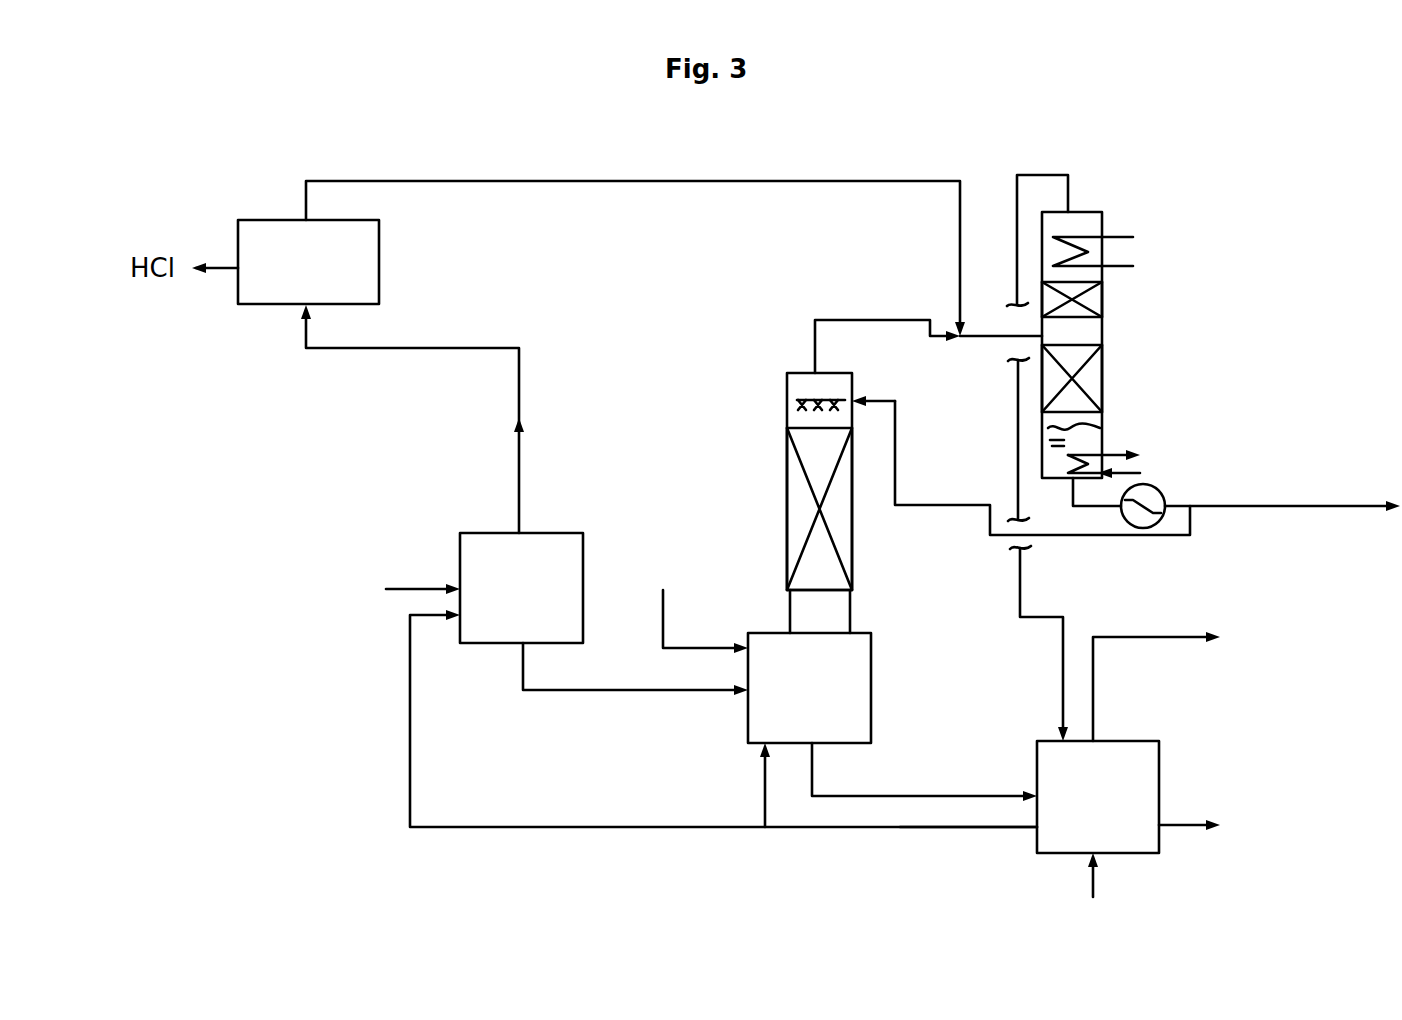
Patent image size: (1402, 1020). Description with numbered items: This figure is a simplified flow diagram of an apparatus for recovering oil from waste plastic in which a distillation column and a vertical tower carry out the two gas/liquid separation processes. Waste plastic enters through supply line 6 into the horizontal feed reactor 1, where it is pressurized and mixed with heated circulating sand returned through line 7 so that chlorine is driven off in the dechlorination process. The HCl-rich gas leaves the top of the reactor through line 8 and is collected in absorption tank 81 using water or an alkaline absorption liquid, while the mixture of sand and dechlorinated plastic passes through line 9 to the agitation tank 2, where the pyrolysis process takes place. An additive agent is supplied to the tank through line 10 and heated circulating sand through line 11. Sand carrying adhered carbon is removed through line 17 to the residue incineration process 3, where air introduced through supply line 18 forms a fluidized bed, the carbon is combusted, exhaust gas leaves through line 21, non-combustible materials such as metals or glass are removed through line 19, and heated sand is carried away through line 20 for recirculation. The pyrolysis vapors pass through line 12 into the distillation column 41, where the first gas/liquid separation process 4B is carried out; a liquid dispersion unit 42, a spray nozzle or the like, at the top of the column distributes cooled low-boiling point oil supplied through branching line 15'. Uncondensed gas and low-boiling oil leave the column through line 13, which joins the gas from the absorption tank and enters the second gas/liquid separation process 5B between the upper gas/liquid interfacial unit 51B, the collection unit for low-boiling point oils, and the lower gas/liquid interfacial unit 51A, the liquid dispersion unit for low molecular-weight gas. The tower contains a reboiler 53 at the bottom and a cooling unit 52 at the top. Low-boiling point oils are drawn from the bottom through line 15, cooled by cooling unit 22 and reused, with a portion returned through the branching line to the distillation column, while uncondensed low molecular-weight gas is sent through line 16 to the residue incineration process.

The horizontal feed reactor 1 is at (562, 533).
The agitation tank 2 is at (871, 690).
The separation unit 3 is at (1159, 770).
The first gas/liquid separation process 4B is at (775, 450).
The distillation column 41 is at (790, 510).
The liquid dispersion unit 42 is at (815, 398).
The second gas/liquid separation process 5B is at (1102, 332).
The lower gas/liquid interfacial unit 51A is at (1102, 386).
The upper gas/liquid interfacial unit 51B is at (1112, 299).
The cooling unit 52 is at (1115, 237).
The reboiler 53 is at (1068, 462).
The supply line 6 is at (414, 589).
The line 7 is at (410, 735).
The line 8 is at (519, 465).
The absorption tank 81 is at (262, 304).
The line 9 is at (605, 690).
The line 10 is at (663, 610).
The line 11 is at (760, 787).
The line 12 is at (851, 622).
The line 13 is at (882, 320).
The line 15 is at (1282, 475).
The branching line 15' is at (1021, 485).
The line 16 is at (1068, 196).
The line 17 is at (932, 796).
The supply line 18 is at (1093, 896).
The line 19 is at (1185, 825).
The line 20 is at (968, 827).
The line 21 is at (1160, 637).
The cooling unit 22 is at (1156, 521).